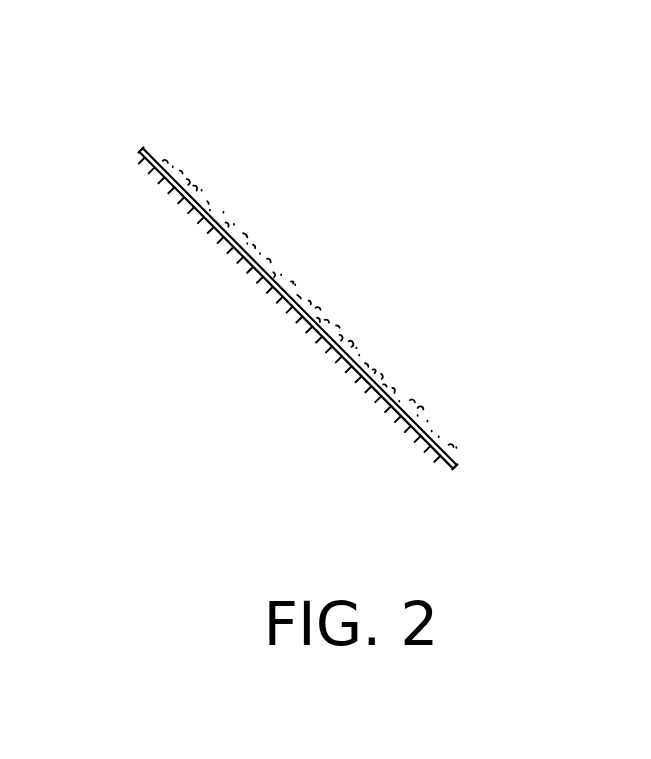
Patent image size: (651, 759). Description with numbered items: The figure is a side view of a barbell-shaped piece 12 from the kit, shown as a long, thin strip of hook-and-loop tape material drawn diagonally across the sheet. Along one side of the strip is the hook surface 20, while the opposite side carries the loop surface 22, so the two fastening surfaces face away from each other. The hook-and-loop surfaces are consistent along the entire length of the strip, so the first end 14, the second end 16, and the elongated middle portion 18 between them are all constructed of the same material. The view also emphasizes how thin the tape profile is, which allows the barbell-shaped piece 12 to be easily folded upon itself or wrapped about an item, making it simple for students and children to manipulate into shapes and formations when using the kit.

The barbell-shaped piece 12 is at (384, 138).
The first end 14 is at (138, 142).
The second end 16 is at (458, 470).
The elongated middle portion 18 is at (278, 305).
The hook surface 20 is at (167, 205).
The loop surface 22 is at (340, 323).